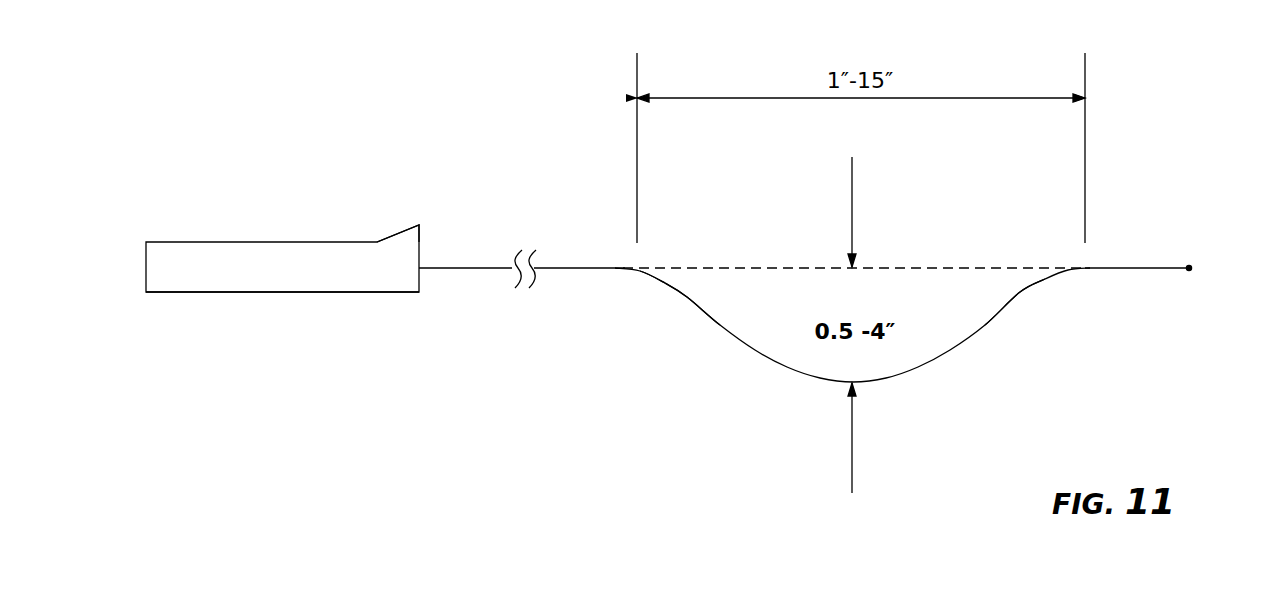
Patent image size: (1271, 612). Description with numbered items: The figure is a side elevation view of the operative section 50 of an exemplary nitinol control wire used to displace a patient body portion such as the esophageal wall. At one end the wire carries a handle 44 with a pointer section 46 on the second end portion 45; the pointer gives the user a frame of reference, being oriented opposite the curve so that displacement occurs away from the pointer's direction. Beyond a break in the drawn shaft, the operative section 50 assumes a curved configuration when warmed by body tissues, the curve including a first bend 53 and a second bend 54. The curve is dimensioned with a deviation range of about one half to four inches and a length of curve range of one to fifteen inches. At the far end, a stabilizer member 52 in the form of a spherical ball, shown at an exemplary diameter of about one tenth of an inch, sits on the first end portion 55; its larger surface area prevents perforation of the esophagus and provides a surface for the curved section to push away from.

The handle 44 is at (222, 250).
The second end portion 45 is at (250, 290).
The pointer section 46 is at (403, 241).
The operative section 50 is at (913, 391).
The stabilizer member 52 is at (1187, 259).
The first bend 53 is at (688, 298).
The second bend 54 is at (1023, 290).
The first end portion 55 is at (1135, 269).